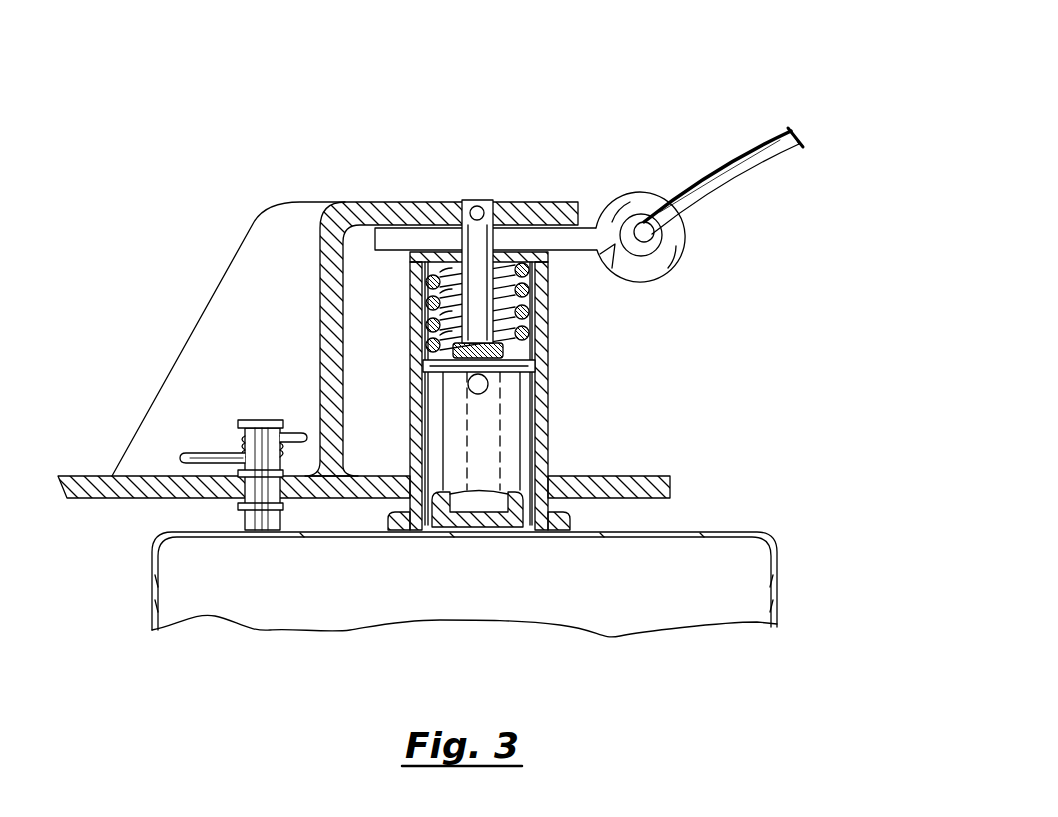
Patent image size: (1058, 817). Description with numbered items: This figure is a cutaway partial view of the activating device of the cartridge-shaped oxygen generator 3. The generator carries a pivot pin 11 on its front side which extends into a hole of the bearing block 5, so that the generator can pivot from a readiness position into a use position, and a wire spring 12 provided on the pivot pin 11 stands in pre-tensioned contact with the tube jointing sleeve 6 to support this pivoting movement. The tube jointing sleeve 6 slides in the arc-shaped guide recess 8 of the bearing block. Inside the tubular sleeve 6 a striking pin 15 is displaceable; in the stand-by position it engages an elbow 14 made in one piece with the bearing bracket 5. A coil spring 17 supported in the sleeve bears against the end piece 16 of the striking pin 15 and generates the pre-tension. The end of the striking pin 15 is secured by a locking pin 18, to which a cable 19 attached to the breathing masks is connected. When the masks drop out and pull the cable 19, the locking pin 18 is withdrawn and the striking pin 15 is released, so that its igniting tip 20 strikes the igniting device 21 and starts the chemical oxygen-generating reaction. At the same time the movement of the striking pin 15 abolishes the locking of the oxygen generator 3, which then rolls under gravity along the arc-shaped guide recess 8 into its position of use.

The oxygen generator 3 is at (713, 602).
The bearing block 5 is at (120, 500).
The tube jointing sleeve 6 is at (545, 447).
The arc-shaped guide recess 8 is at (565, 475).
The pivot pin 11 is at (255, 420).
The wire spring 12 is at (240, 420).
The elbow 14 is at (333, 202).
The striking pin 15 is at (492, 202).
The end piece 16 is at (545, 362).
The coil spring 17 is at (545, 300).
The locking pin 18 is at (673, 237).
The cable 19 is at (745, 138).
The igniting tip 20 is at (482, 388).
The igniting device 21 is at (470, 505).